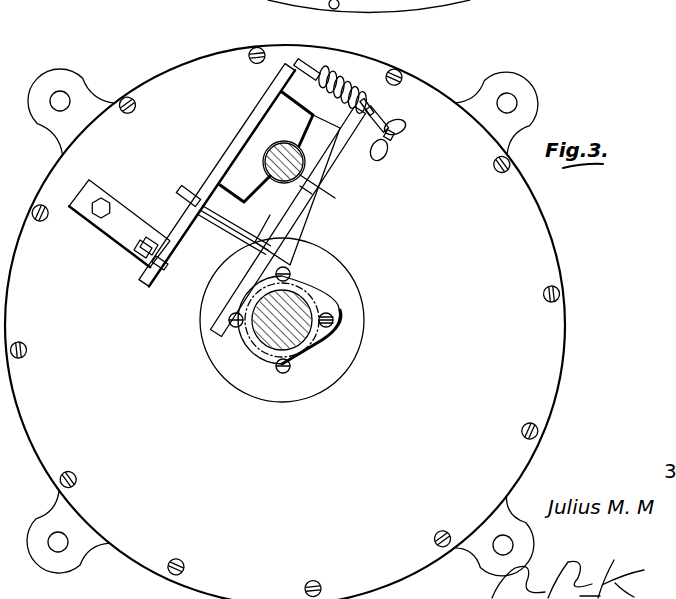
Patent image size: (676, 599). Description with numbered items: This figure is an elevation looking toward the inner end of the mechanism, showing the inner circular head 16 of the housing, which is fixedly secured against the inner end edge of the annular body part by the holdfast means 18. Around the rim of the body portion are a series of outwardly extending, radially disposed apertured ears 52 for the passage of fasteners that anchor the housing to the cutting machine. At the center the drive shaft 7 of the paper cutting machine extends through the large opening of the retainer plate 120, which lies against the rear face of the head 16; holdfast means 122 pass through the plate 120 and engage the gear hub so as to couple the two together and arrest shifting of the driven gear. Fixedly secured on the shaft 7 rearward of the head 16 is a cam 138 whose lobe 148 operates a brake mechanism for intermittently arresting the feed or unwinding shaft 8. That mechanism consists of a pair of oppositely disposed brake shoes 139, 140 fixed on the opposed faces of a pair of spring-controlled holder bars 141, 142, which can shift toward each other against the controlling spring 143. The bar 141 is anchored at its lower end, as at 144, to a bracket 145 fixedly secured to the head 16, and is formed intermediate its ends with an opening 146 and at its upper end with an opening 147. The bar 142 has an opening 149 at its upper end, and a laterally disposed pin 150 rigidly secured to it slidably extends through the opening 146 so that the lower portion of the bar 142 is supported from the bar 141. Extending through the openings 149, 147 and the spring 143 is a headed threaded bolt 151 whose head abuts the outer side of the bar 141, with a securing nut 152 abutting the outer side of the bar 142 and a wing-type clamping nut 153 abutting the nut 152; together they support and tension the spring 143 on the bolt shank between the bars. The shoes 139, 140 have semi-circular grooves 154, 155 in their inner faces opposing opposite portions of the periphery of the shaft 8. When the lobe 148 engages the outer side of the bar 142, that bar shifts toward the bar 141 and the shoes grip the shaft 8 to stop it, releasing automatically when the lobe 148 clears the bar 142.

The inner circular head 16 is at (530, 261).
The apertured ears 52 is at (68, 78).
The holdfast means 18 is at (404, 76).
The retainer plate 120 is at (338, 280).
The cam 138 is at (300, 288).
The lobe 148 is at (338, 308).
The holdfast means 122 is at (283, 365).
The drive shaft 7 is at (272, 330).
The holder bar 141 is at (258, 121).
The holder bar 142 is at (326, 172).
The brake shoe 139 is at (266, 146).
The brake shoe 140 is at (290, 197).
The semi-circular groove 155 is at (305, 195).
The semi-circular groove 154 is at (280, 157).
The feed or unwinding shaft 8 is at (285, 151).
The pin 150 is at (236, 240).
The bracket 145 is at (154, 237).
The opening 146 is at (191, 216).
The anchorage 144 is at (136, 267).
The opening 147 is at (299, 61).
The controlling spring 143 is at (343, 92).
The headed threaded bolt 151 is at (351, 97).
The opening 149 is at (380, 108).
The clamping nut 153 is at (406, 129).
The securing nut 152 is at (380, 160).